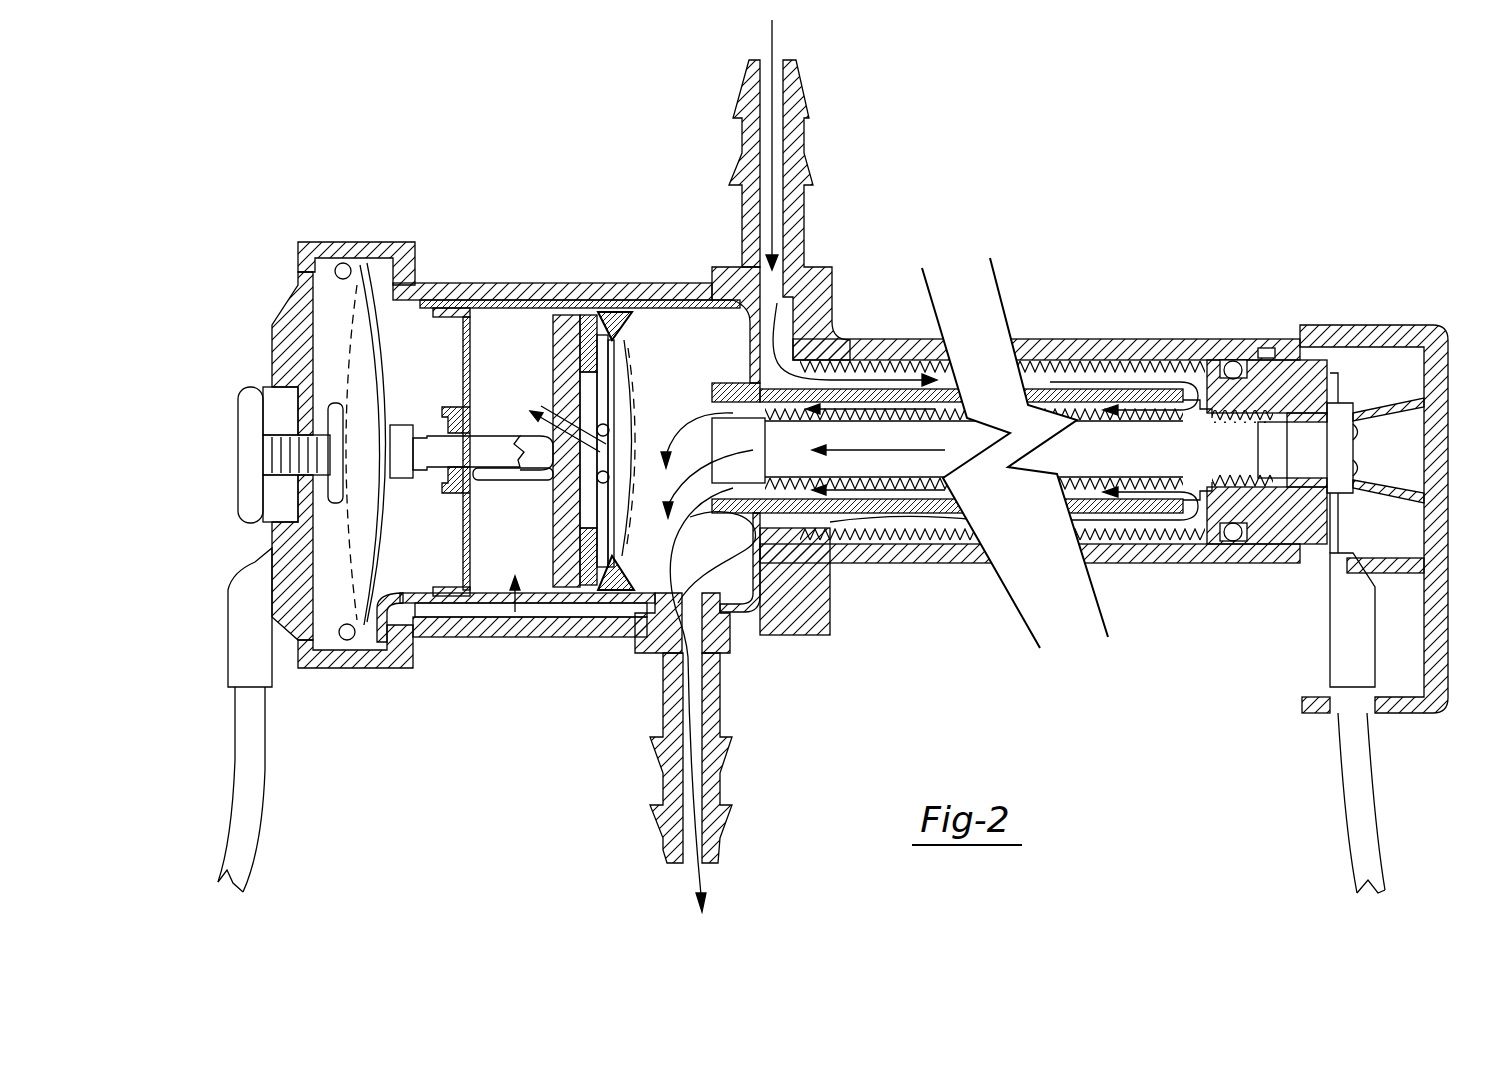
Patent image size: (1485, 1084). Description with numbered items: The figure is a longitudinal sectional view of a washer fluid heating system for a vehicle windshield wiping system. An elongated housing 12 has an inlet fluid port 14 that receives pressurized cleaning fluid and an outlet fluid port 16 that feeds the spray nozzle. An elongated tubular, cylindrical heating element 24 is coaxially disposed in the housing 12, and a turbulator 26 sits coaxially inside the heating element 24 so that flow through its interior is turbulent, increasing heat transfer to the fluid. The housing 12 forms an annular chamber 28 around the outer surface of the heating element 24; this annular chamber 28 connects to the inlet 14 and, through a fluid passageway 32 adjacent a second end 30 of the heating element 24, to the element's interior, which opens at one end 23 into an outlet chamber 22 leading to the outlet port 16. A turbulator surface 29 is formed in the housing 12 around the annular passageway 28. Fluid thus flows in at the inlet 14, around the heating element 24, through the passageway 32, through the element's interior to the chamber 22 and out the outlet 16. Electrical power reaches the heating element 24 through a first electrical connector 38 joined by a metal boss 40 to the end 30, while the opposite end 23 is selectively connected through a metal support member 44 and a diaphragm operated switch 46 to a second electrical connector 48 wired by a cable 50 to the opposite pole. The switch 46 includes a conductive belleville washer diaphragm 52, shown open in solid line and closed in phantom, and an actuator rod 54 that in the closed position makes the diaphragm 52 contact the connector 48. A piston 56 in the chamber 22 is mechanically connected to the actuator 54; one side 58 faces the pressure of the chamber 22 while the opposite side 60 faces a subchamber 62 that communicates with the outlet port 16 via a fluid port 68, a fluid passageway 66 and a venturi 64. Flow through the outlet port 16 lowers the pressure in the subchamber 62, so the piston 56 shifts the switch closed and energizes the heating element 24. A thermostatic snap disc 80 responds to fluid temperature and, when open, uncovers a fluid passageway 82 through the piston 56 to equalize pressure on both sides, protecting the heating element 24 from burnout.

The housing 12 is at (1166, 345).
The inlet fluid port 14 is at (808, 94).
The outlet fluid port 16 is at (721, 781).
The outlet chamber 22 is at (662, 369).
The one end of the heating element 23 is at (700, 543).
The heating element 24 is at (1034, 370).
The turbulator 26 is at (1083, 477).
The annular chamber 28 is at (943, 525).
The turbulator surface 29 is at (868, 378).
The second end of the heating element 30 is at (1196, 398).
The fluid passageway 32 is at (1196, 502).
The first electrical connector 38 is at (1356, 830).
The metal boss 40 is at (1312, 572).
The metal support member 44 is at (571, 290).
The diaphragm operated switch 46 is at (330, 486).
The second electrical connector 48 is at (272, 432).
The cable 50 is at (260, 790).
The belleville washer diaphragm 52 is at (372, 548).
The actuator rod 54 is at (393, 428).
The piston 56 is at (551, 594).
The one side of the piston 58 is at (627, 640).
The opposite side of the piston 60 is at (552, 541).
The subchamber 62 is at (495, 372).
The venturi 64 is at (690, 662).
The fluid passageway 66 is at (445, 607).
The fluid port 68 is at (515, 612).
The thermostatic snap disc 80 is at (615, 335).
The fluid passageway 82 is at (556, 468).